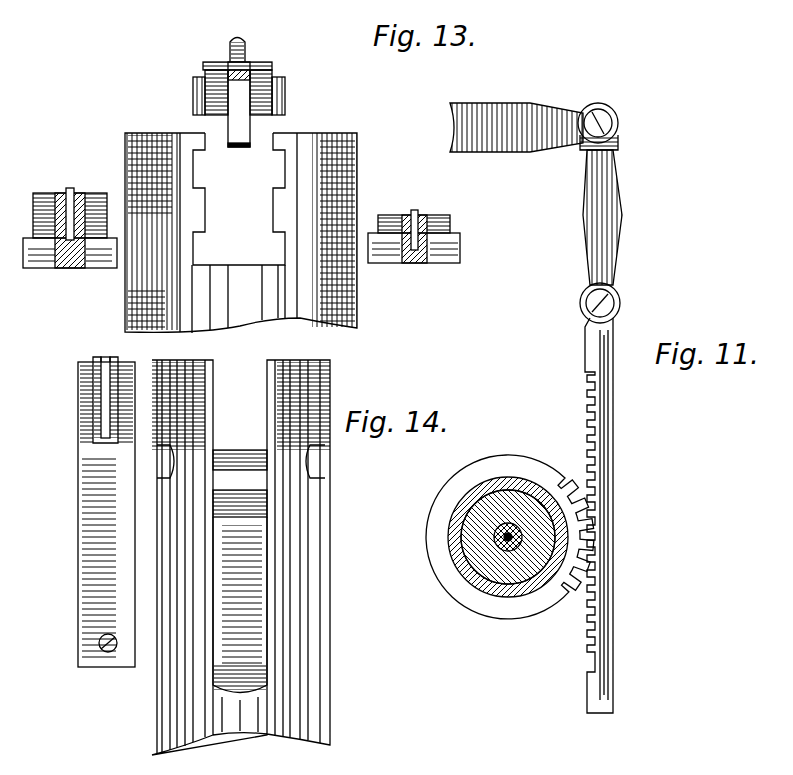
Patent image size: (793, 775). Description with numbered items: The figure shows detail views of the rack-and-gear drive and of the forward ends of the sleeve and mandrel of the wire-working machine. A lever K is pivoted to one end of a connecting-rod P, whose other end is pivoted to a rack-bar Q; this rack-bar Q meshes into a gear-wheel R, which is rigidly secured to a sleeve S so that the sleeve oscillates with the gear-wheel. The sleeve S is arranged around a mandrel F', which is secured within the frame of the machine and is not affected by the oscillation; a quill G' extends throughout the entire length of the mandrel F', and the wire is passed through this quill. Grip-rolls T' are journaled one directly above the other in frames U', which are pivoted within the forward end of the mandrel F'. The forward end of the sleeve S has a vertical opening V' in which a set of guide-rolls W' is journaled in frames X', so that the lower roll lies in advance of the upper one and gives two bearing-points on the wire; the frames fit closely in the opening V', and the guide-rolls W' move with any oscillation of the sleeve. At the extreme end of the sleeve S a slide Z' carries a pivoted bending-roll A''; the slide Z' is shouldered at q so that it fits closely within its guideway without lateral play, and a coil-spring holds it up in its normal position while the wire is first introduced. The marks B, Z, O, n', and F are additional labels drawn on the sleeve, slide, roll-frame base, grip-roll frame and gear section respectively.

In FIG. 13, the sleeve S is at (241, 233).
In FIG. 11, the sleeve S is at (506, 580).
In FIG. 13, the vertical opening V' is at (239, 199).
In FIG. 13, the bending-roll A'' is at (252, 104).
In FIG. 13, the bottom plate of stem B is at (228, 140).
In FIG. 13, the slide Z' is at (223, 51).
In FIG. 13, the screw Z is at (249, 43).
In FIG. 13, the shoulder q is at (193, 93).
In FIG. 13, the roll-frame X' is at (241, 242).
In FIG. 13, the guide-rolls W' is at (273, 241).
In FIG. 13, the base O is at (24, 243).
In FIG. 14, the grip-rolls T' is at (91, 512).
In FIG. 14, the frames U' is at (114, 571).
In FIG. 14, the screw n' is at (88, 661).
In FIG. 14, the mandrel F' is at (241, 557).
In FIG. 11, the lever K is at (490, 140).
In FIG. 11, the connecting-rod P is at (612, 217).
In FIG. 11, the rack-bar Q is at (607, 324).
In FIG. 11, the gear-wheel R is at (578, 580).
In FIG. 11, the outer gear ring F is at (510, 539).
In FIG. 11, the quill G' is at (508, 507).